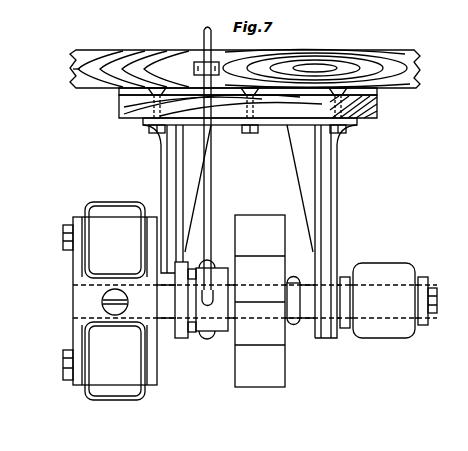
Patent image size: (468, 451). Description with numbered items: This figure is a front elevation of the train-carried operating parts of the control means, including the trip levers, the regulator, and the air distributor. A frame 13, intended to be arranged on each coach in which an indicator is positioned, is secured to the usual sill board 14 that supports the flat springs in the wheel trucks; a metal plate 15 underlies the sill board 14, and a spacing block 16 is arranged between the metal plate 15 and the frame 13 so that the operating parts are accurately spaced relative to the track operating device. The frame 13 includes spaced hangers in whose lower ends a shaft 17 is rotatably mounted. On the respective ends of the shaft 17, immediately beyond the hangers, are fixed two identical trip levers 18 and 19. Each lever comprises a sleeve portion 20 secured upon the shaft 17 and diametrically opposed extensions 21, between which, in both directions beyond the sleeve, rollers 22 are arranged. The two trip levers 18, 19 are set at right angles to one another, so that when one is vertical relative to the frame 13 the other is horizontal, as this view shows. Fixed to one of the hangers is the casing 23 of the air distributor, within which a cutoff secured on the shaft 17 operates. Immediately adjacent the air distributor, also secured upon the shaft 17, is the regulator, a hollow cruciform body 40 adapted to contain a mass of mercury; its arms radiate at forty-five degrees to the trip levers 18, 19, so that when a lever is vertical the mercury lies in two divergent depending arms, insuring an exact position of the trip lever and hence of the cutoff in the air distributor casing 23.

The frame 13 is at (160, 165).
The sill board 14 is at (150, 49).
The metal plate 15 is at (119, 93).
The spacing block 16 is at (119, 110).
The shaft 17 is at (310, 320).
The trip lever 18 is at (73, 270).
The trip lever 19 is at (422, 276).
The sleeve portion 20 is at (73, 303).
The extension 21 is at (77, 222).
The roller 22 is at (113, 202).
The casing 23 is at (222, 333).
The hollow cruciform body 40 is at (258, 215).